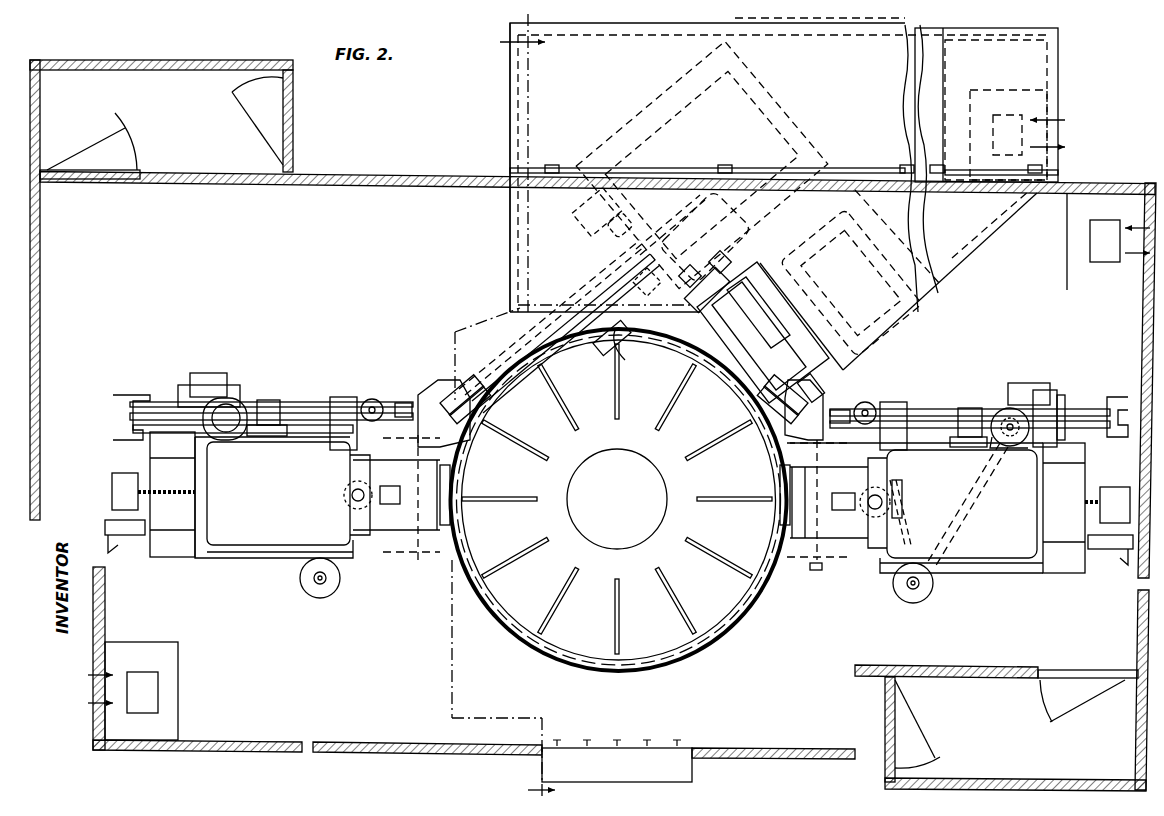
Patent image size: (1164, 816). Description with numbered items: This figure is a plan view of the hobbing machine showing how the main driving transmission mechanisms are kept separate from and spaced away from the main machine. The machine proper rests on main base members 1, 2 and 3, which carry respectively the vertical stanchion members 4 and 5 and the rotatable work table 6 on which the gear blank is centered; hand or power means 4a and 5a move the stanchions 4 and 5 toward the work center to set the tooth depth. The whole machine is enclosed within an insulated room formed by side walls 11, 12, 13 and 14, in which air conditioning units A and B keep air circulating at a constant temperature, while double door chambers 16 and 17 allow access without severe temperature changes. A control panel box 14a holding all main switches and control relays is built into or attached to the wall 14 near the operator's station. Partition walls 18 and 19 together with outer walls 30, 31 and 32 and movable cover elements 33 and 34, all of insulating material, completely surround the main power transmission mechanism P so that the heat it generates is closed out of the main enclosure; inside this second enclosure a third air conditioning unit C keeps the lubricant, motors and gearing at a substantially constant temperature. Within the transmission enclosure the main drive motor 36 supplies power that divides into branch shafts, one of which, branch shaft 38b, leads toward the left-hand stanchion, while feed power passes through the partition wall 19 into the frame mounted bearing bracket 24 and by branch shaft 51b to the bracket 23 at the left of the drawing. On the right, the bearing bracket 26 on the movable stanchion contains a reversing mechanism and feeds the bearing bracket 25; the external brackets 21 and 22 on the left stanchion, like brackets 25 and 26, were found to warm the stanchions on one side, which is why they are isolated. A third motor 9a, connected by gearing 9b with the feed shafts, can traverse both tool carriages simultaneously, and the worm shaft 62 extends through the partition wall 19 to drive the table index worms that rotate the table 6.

The main base member 1 is at (170, 552).
The main base member 2 is at (1060, 560).
The main base member 3 is at (503, 417).
The vertical stanchion member 4 is at (322, 497).
The hand or power means 4a is at (110, 490).
The vertical stanchion member 5 is at (911, 506).
The hand or power means 5a is at (1106, 558).
The rotatable work table 6 is at (619, 500).
The third motor 9a is at (772, 332).
The gearing 9b is at (700, 306).
The side wall 11 is at (40, 330).
The side wall 12 is at (1140, 368).
The side wall 13 is at (392, 186).
The side wall 14 is at (378, 742).
The control panel box 14a is at (617, 761).
The double door chamber 16 is at (161, 119).
The double door chamber 17 is at (1000, 728).
The partition wall 18 is at (510, 244).
The partition wall 19 is at (910, 322).
The external bracket 21 is at (228, 384).
The external bracket 22 is at (364, 398).
The bracket 23 is at (436, 386).
The bearing bracket 24 is at (818, 398).
The bearing bracket 25 is at (880, 404).
The bearing bracket 26 is at (1008, 392).
The outer wall 30 is at (510, 116).
The outer wall 31 is at (618, 36).
The outer wall 32 is at (1058, 58).
The movable cover element 33 is at (899, 168).
The movable cover element 34 is at (996, 110).
The main drive motor 36 is at (872, 246).
The branch shaft 38b is at (490, 362).
The branch shaft 51b is at (540, 335).
The worm shaft 62 is at (626, 338).
The main power transmission mechanism P is at (760, 100).
The air conditioning unit A is at (133, 691).
The air conditioning unit B is at (1108, 242).
The third air conditioning unit C is at (1002, 90).